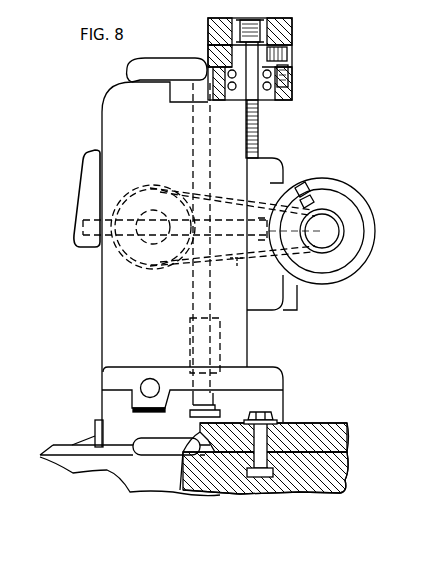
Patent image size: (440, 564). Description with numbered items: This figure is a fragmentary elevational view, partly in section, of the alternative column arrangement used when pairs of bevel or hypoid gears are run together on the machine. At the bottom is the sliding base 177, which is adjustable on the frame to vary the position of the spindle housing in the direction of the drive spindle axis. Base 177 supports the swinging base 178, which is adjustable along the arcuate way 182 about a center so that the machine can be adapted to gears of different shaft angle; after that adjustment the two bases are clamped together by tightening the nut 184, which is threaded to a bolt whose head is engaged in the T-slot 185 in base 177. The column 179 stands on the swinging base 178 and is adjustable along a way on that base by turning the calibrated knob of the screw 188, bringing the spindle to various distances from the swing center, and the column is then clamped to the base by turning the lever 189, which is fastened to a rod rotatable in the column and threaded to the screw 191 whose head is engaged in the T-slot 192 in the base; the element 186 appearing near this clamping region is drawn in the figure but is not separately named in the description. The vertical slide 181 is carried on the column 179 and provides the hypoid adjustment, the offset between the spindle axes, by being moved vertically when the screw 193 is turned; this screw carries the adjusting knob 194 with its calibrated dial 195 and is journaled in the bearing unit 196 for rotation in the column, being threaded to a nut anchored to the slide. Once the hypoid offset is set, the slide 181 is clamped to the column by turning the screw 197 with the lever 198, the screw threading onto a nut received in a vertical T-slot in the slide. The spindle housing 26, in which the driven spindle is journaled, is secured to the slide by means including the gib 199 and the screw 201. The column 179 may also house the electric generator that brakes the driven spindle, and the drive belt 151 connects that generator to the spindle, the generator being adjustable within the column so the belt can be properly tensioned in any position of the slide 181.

The housing 26 is at (350, 192).
The drive belt 151 is at (237, 263).
The sliding base 177 is at (142, 478).
The swinging base 178 is at (112, 425).
The column 179 is at (112, 313).
The vertical slide 181 is at (270, 168).
The arcuate way 182 is at (115, 440).
The nut 184 is at (263, 438).
The T-slot 185 is at (252, 478).
The slot 186 is at (138, 400).
The screw 188 is at (145, 388).
The lever 189 is at (181, 62).
The screw 191 is at (207, 402).
The T-slot 192 is at (193, 437).
The screw 193 is at (259, 125).
The adjusting knob 194 is at (290, 20).
The calibrated dial 195 is at (288, 56).
The bearing unit 196 is at (288, 84).
The screw 197 is at (117, 240).
The lever 198 is at (82, 197).
The gib 199 is at (293, 300).
The screw 201 is at (300, 183).